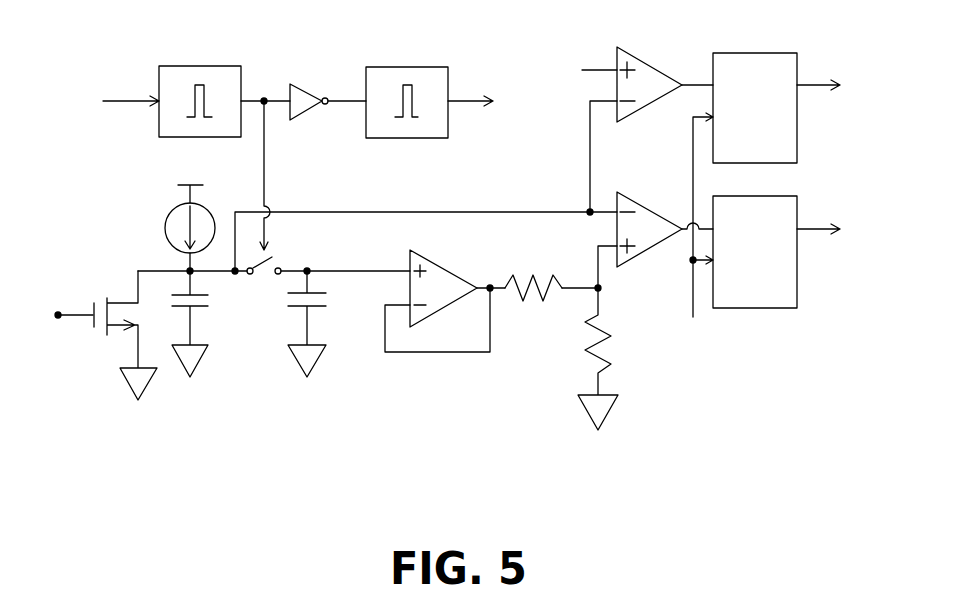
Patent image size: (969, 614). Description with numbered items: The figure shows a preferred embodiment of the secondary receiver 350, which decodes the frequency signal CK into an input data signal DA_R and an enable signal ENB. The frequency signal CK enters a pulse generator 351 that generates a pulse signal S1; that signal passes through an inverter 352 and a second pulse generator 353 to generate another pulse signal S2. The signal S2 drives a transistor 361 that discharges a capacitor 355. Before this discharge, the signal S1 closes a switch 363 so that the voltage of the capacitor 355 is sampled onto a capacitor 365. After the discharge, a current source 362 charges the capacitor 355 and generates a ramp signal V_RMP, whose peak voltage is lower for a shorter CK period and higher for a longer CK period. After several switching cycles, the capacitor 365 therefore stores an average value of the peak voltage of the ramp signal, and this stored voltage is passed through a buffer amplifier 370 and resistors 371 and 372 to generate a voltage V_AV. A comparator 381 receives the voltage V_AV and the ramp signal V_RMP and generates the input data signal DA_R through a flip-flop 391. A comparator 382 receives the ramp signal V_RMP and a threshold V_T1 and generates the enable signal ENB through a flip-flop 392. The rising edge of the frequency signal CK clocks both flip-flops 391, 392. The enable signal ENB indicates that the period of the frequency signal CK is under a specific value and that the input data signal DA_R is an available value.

The secondary receiver 350 is at (750, 511).
The pulse generator 351 is at (214, 66).
The inverter 352 is at (304, 112).
The pulse generator 353 is at (423, 67).
The capacitor 355 is at (206, 324).
The transistor 361 is at (121, 327).
The current source 362 is at (172, 204).
The switch 363 is at (272, 257).
The capacitor 365 is at (320, 324).
The buffer amplifier 370 is at (457, 254).
The resistor 371 is at (533, 267).
The resistor 372 is at (617, 359).
The comparator 381 is at (650, 208).
The comparator 382 is at (648, 64).
The flip-flop 391 is at (797, 283).
The flip-flop 392 is at (797, 131).